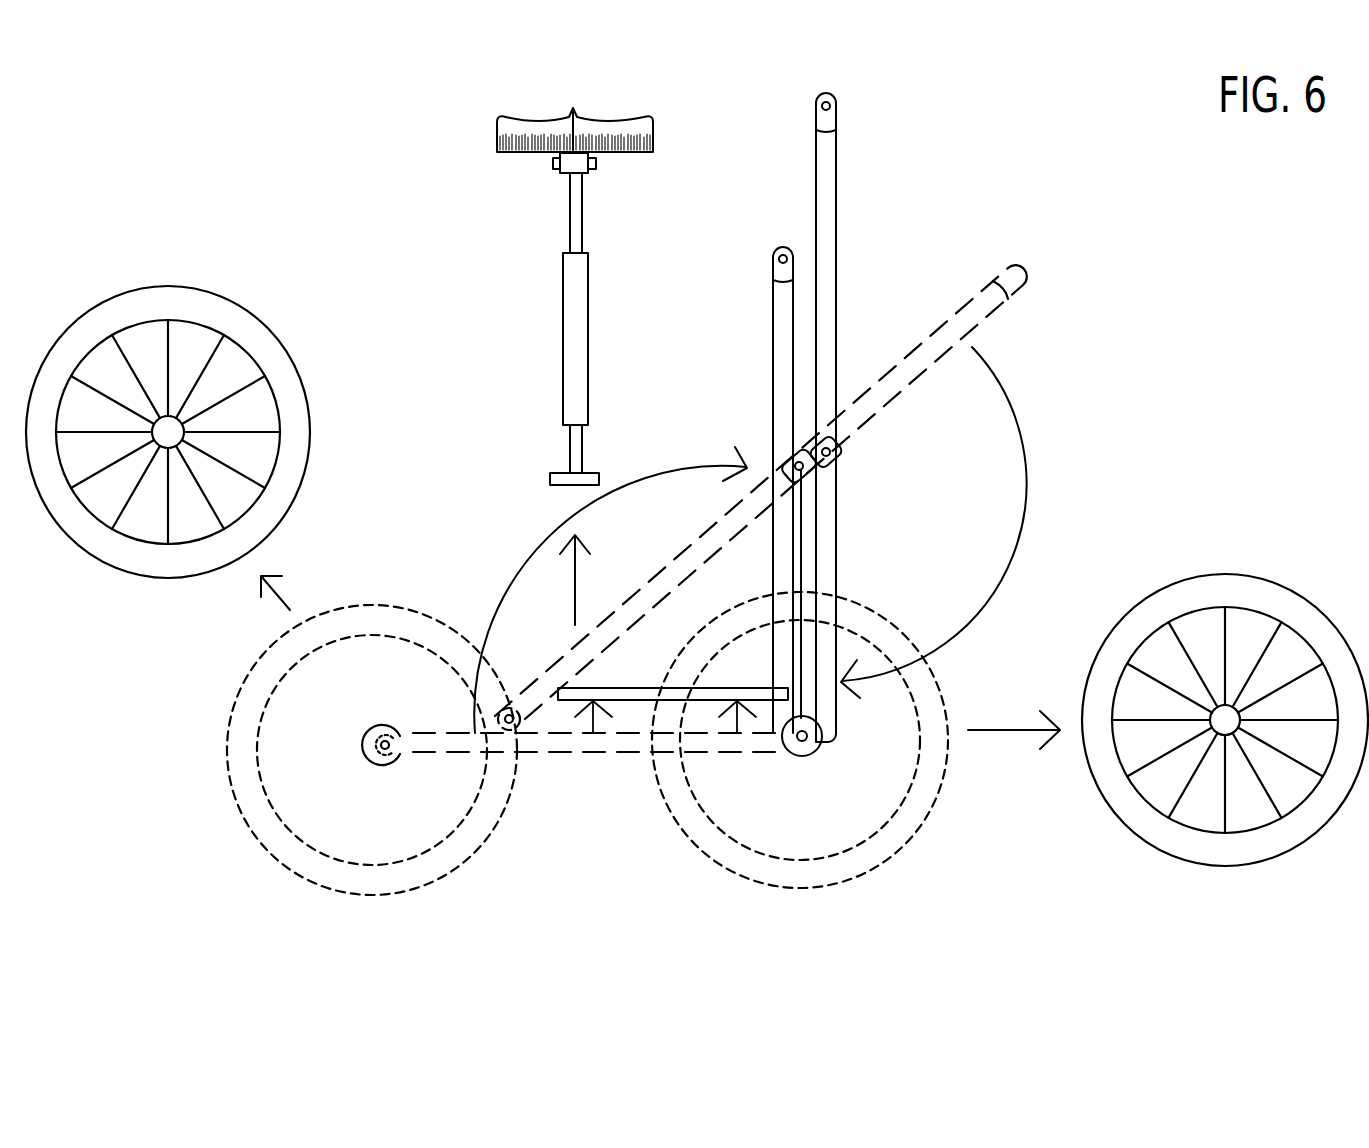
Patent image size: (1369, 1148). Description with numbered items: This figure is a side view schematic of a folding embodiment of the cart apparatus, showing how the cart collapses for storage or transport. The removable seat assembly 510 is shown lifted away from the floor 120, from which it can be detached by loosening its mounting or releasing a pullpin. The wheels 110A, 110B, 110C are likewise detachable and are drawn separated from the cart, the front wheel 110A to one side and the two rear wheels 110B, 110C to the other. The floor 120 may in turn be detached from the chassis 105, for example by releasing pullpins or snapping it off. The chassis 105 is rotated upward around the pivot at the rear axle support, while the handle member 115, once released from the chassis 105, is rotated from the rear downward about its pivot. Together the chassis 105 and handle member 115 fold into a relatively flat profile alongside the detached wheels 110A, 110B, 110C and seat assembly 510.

The chassis 105 is at (774, 329).
The wheel 110A is at (133, 286).
The wheel 110B is at (1225, 680).
The wheel 110C is at (1223, 574).
The handle member 115 is at (836, 519).
The floor 120 is at (628, 686).
The seat assembly 510 is at (464, 135).